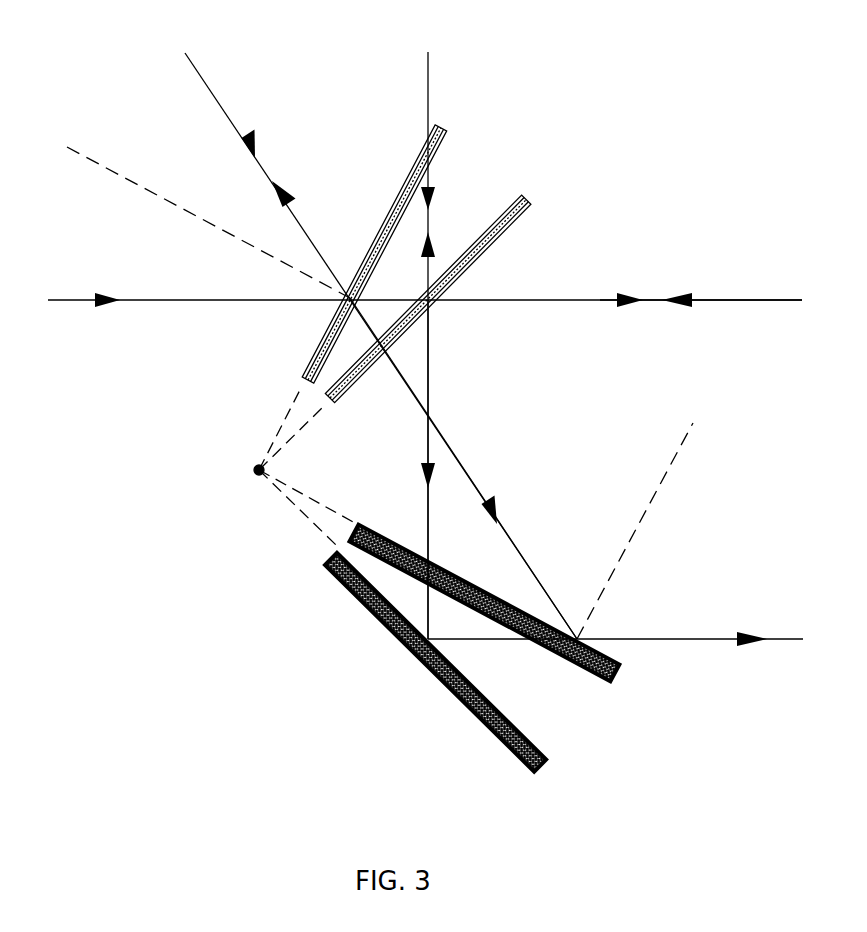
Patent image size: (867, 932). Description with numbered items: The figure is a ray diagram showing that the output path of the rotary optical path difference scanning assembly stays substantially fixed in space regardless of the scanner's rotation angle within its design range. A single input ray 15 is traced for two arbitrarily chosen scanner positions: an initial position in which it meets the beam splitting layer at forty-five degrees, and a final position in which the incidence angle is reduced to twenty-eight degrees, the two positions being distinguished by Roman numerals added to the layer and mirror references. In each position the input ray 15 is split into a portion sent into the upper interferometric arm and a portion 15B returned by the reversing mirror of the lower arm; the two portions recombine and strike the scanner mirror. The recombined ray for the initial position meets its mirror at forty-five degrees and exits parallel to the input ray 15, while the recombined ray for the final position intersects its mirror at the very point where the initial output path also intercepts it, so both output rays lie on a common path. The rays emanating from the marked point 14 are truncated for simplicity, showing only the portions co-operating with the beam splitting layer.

The input ray 15 is at (193, 303).
The split ray of lower interferometric arm 15B is at (728, 300).
The focal point 14 is at (258, 478).